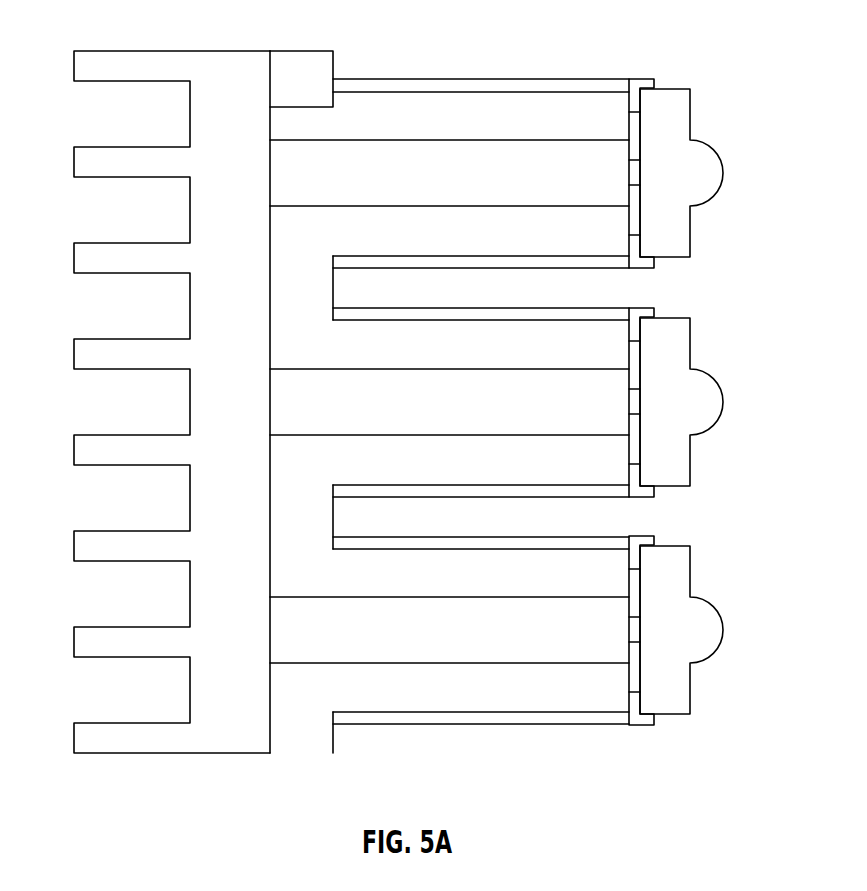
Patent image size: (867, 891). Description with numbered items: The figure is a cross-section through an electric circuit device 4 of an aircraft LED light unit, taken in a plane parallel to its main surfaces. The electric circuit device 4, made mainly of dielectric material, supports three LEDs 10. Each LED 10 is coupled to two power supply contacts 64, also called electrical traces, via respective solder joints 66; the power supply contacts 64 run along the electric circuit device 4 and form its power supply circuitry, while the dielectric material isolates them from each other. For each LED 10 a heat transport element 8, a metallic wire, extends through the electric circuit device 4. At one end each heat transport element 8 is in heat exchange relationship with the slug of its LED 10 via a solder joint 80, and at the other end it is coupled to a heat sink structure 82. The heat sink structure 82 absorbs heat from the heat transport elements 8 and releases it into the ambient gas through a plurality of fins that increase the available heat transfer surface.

The electric circuit device 4 is at (305, 52).
The heat transport element 8 is at (287, 182).
The LED 10 is at (718, 153).
The power supply contact 64 is at (483, 78).
The solder joint 66 is at (641, 78).
The solder joint 80 is at (628, 175).
The heat sink structure 82 is at (205, 224).